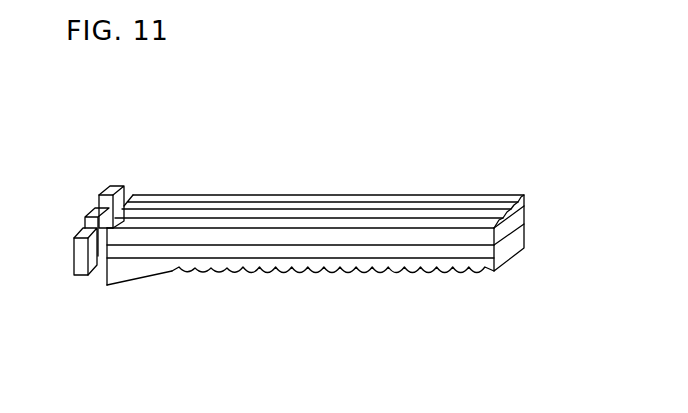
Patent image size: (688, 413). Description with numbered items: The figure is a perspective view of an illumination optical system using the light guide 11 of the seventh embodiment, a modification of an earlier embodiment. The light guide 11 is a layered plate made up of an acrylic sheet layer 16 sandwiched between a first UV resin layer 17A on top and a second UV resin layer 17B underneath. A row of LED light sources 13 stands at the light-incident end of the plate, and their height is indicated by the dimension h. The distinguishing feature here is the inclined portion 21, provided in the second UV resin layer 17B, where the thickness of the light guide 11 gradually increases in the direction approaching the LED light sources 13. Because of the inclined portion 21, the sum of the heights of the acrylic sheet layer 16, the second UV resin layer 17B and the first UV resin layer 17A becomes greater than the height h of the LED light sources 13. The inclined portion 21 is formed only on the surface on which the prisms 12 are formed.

The light guide 11 is at (536, 193).
The prisms 12 is at (435, 268).
The LED light sources 13 is at (106, 197).
The acrylic sheet layer 16 is at (293, 255).
The first UV resin layer 17A is at (202, 233).
The second UV resin layer 17B is at (345, 268).
The inclined portion 21 is at (122, 272).
The height of the LED light sources h is at (61, 243).